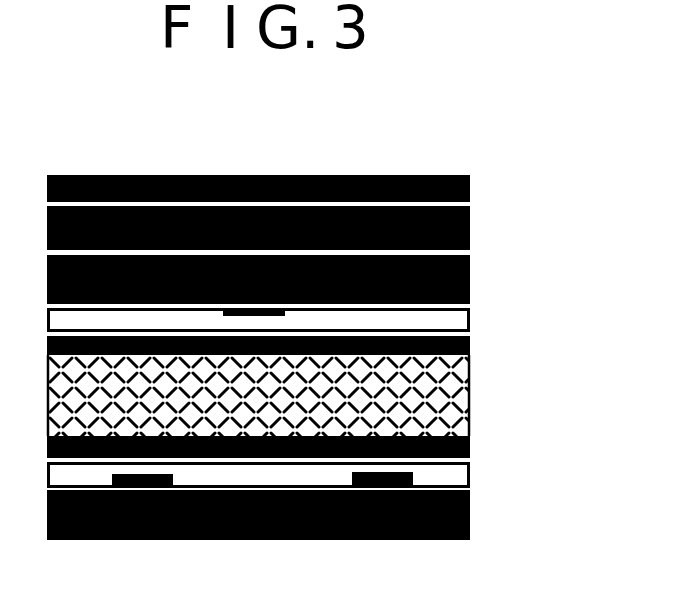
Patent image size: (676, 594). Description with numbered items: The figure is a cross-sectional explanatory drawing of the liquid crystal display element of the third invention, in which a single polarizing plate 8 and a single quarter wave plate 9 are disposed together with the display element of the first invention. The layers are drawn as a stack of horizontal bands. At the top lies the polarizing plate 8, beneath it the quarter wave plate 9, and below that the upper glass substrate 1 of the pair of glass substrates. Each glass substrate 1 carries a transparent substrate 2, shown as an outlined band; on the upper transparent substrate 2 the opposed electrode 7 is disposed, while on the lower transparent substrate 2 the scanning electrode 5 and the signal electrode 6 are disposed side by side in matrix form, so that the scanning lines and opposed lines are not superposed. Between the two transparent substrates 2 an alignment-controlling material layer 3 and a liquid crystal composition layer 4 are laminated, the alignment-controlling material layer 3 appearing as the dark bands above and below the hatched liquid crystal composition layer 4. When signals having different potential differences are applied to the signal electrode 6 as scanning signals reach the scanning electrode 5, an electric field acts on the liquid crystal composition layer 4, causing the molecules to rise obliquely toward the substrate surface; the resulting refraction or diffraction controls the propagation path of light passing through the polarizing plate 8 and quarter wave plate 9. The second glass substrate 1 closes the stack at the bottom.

The glass substrate 1 is at (470, 270).
The transparent substrate 2 is at (470, 312).
The alignment-controlling material layer 3 is at (470, 340).
The liquid crystal composition layer 4 is at (470, 385).
The scanning electrode 5 is at (143, 540).
The signal electrode 6 is at (392, 540).
The opposed electrode 7 is at (249, 175).
The polarizing plate 8 is at (470, 183).
The quarter wave plate 9 is at (470, 218).